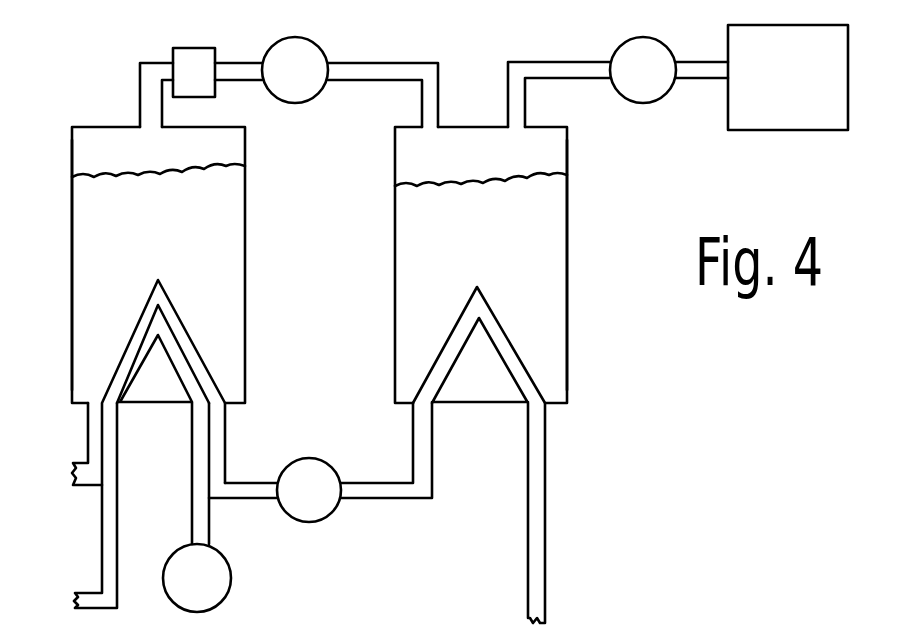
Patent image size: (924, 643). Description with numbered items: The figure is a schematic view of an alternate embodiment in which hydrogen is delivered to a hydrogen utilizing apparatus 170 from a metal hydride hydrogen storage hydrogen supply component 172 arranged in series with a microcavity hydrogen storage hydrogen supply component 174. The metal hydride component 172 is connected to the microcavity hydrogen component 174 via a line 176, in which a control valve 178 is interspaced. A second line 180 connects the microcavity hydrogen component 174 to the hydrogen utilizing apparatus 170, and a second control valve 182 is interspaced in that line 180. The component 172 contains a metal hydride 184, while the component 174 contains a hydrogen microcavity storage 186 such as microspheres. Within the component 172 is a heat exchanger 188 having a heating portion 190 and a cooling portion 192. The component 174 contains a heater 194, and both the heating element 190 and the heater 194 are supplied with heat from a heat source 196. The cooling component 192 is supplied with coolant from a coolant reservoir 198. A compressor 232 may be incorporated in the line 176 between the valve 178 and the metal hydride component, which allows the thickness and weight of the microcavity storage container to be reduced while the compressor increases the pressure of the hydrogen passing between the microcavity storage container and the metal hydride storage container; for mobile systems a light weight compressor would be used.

The hydrogen utilizing apparatus 170 is at (812, 130).
The metal hydride hydrogen storage hydrogen supply component 172 is at (289, 187).
The microcavity hydrogen storage hydrogen supply component 174 is at (568, 178).
The line 176 is at (250, 63).
The control valve 178 is at (328, 43).
The second line 180 is at (577, 62).
The second control valve 182 is at (652, 40).
The metal hydride 184 is at (113, 257).
The hydrogen microcavity storage 186 is at (548, 286).
The heat exchanger 188 is at (114, 354).
The heating portion 190 is at (202, 368).
The cooling portion 192 is at (180, 377).
The heater 194 is at (533, 385).
The heat source 196 is at (327, 523).
The coolant reservoir 198 is at (230, 593).
The compressor 232 is at (181, 59).